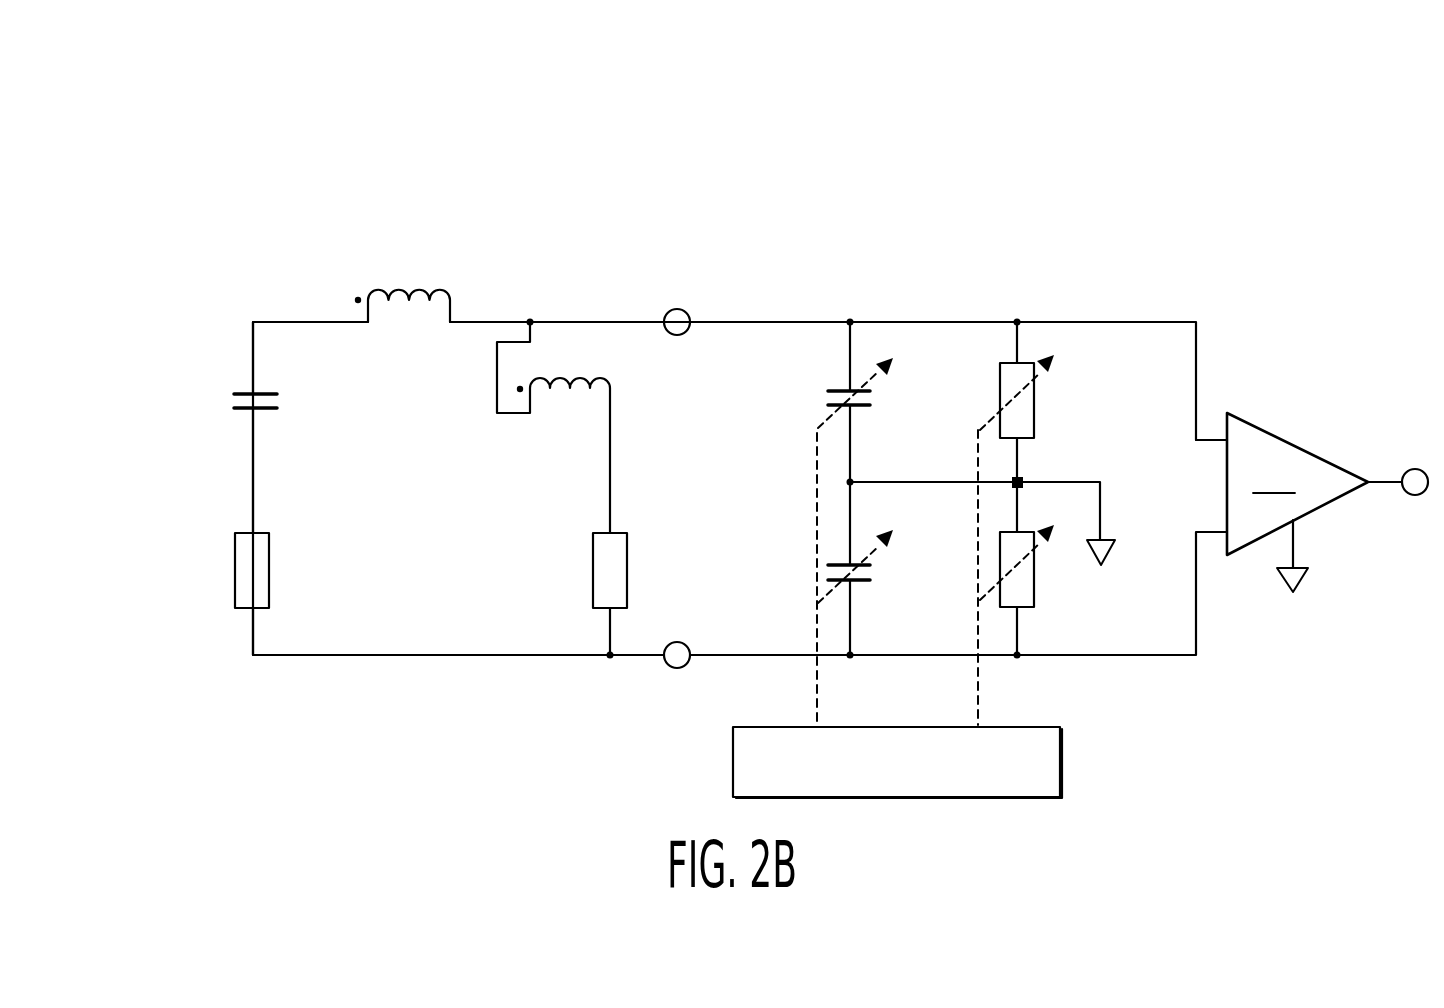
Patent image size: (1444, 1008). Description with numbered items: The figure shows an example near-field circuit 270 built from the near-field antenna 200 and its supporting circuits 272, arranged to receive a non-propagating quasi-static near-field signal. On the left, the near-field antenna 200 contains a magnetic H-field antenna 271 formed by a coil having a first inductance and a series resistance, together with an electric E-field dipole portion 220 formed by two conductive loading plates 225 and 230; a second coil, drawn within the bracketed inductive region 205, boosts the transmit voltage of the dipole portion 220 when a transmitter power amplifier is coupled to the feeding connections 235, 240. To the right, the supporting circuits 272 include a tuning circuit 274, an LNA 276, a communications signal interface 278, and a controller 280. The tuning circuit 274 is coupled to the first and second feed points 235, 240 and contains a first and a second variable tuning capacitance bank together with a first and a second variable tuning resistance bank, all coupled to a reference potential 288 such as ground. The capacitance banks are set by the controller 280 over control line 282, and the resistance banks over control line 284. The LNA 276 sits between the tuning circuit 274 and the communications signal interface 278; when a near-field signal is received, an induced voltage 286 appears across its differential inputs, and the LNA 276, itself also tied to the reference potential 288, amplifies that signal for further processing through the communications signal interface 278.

The near-field circuit 270 is at (154, 124).
The near-field antenna 200 is at (690, 185).
The supporting circuits 272 is at (1408, 185).
The dipole portion 220 is at (330, 317).
The transformer / inductive coupling 205 is at (616, 317).
The tuning circuit 274 is at (1075, 317).
The loading plate 230 is at (240, 392).
The loading plate 225 is at (248, 413).
The feeding connection 240 is at (677, 335).
The feeding connection 235 is at (689, 644).
The magnetic antenna 271 is at (490, 663).
The control line 282 is at (817, 450).
The control line 284 is at (978, 450).
The reference potential 288 is at (1101, 566).
The controller 280 is at (1063, 762).
The LNA 276 is at (1314, 502).
The induced voltage 286 is at (1217, 512).
The communications signal interface 278 is at (1413, 469).